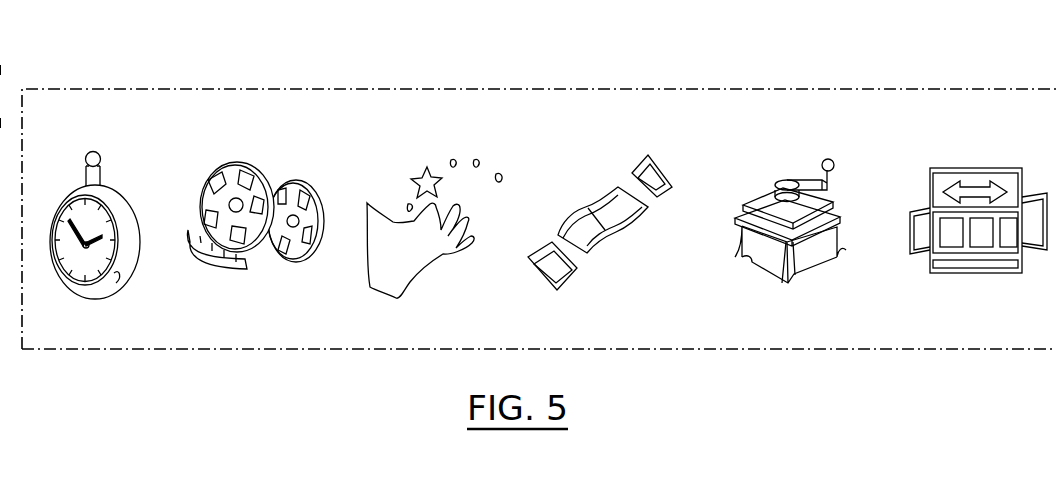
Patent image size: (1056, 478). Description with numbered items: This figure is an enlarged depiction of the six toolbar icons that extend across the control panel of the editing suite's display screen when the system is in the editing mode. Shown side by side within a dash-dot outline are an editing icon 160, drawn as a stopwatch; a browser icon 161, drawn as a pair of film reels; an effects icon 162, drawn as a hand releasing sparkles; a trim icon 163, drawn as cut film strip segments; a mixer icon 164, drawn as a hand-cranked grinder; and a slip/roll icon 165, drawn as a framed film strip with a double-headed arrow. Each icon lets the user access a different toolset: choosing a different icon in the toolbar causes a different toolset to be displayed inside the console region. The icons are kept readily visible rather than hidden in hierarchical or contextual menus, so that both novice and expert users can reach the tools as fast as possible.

The editing icon 160 is at (117, 305).
The browser icon 161 is at (262, 283).
The effects icon 162 is at (433, 153).
The trim icon 163 is at (598, 192).
The mixer icon 164 is at (760, 270).
The slip/roll icon 165 is at (960, 280).